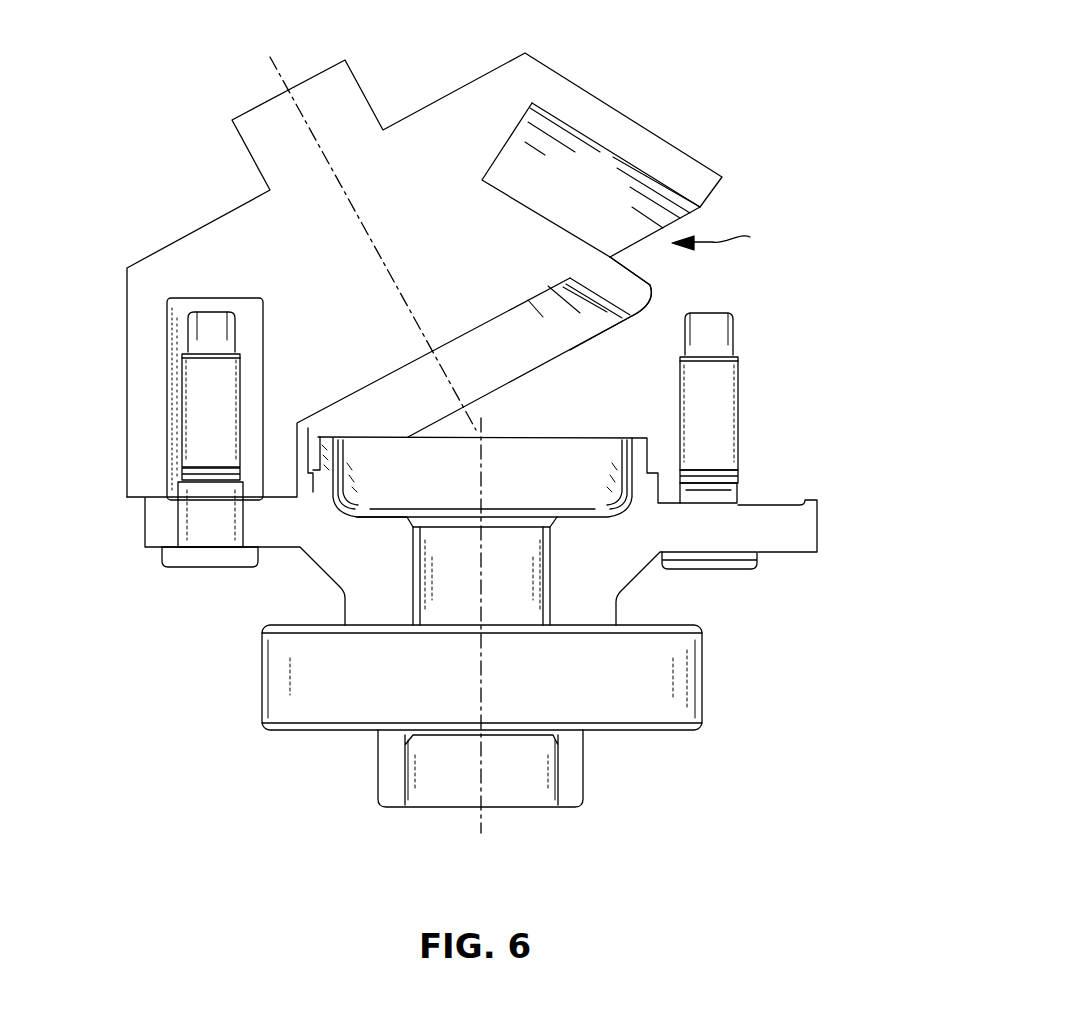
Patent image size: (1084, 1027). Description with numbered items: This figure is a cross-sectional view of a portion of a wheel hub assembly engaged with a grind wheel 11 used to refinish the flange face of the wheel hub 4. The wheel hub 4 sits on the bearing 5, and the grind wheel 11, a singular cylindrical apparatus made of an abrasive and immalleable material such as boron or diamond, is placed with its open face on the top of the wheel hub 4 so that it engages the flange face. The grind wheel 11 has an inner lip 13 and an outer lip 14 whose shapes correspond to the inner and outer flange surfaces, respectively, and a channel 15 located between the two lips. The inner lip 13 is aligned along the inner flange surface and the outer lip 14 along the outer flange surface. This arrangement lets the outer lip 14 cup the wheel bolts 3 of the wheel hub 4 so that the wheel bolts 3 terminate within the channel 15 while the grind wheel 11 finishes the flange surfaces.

The grind wheel 11 is at (105, 357).
The outer lip 14 is at (690, 170).
The channel 15 is at (730, 244).
The inner lip 13 is at (645, 300).
The wheel bolts 3 is at (717, 450).
The wheel hub 4 is at (798, 527).
The bearing 5 is at (680, 667).